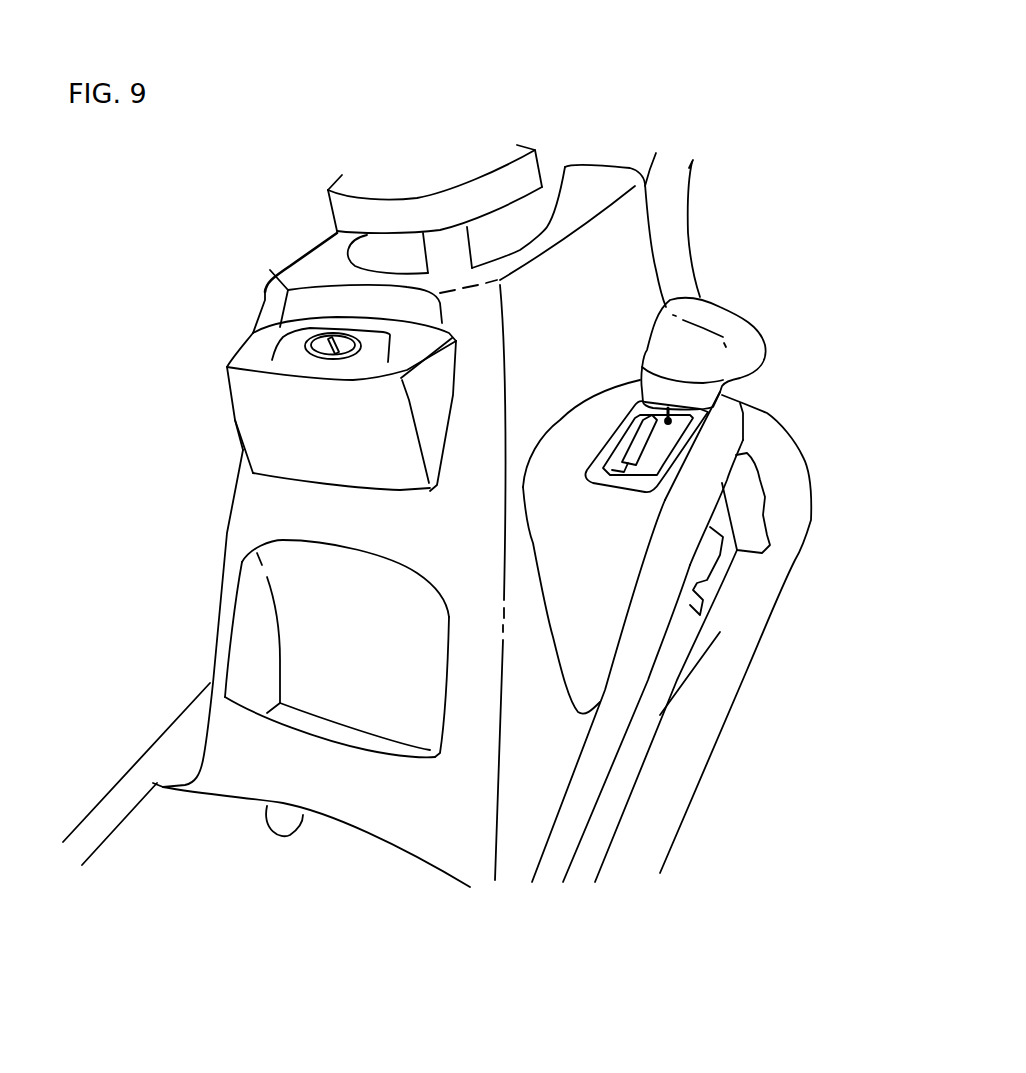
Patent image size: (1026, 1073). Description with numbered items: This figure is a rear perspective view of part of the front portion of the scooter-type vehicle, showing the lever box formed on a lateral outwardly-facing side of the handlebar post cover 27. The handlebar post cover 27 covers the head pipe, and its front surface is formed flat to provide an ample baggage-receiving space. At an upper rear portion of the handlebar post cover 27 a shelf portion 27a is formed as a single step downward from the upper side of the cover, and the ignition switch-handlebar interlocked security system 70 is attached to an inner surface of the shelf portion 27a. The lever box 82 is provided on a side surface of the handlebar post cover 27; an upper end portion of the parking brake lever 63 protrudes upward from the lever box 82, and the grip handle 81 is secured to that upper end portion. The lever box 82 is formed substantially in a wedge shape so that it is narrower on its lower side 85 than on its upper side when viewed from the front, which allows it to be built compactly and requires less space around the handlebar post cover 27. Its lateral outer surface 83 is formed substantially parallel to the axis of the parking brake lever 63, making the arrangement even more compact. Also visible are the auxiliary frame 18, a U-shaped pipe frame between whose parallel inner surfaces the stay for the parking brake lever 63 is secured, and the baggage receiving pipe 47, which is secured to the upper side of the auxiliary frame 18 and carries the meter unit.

The auxiliary frame 18 is at (685, 765).
The handlebar post cover 27 is at (590, 193).
The shelf portion 27a is at (257, 357).
The baggage receiving pipe 47 is at (678, 200).
The parking brake lever 63 is at (670, 425).
The ignition switch-handlebar interlocked security system 70 is at (308, 337).
The grip handle 81 is at (733, 323).
The lever box 82 is at (727, 413).
The lateral outer surface 83 is at (713, 462).
The lower side 85 is at (590, 648).